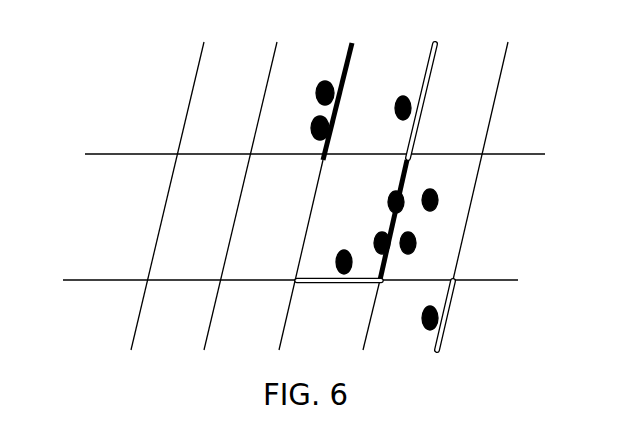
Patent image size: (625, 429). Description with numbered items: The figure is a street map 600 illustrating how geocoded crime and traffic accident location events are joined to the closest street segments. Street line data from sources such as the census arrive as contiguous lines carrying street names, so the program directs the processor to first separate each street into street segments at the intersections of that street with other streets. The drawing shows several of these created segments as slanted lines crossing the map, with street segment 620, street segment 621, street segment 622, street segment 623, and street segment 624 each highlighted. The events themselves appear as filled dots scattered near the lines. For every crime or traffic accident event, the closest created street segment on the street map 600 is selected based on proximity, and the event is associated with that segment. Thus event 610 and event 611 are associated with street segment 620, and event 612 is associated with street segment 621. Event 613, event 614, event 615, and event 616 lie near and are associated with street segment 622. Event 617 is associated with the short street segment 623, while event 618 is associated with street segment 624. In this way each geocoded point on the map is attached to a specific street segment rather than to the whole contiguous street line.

The street map 600 is at (145, 88).
The event 610 is at (320, 83).
The event 611 is at (318, 120).
The event 612 is at (400, 99).
The event 613 is at (438, 200).
The event 614 is at (416, 243).
The event 615 is at (389, 198).
The event 616 is at (376, 237).
The event 617 is at (336, 260).
The event 618 is at (423, 328).
The street segment 620 is at (355, 47).
The street segment 621 is at (438, 56).
The street segment 622 is at (409, 175).
The street segment 623 is at (365, 290).
The street segment 624 is at (445, 315).